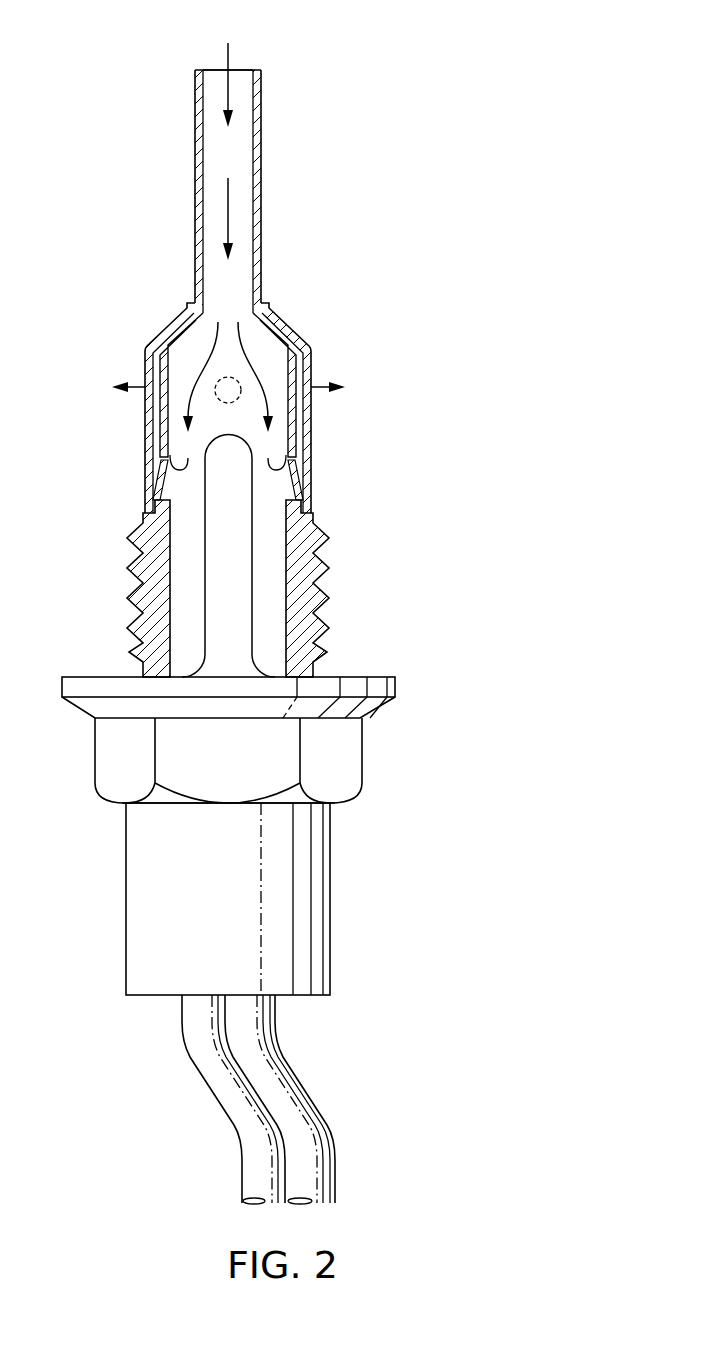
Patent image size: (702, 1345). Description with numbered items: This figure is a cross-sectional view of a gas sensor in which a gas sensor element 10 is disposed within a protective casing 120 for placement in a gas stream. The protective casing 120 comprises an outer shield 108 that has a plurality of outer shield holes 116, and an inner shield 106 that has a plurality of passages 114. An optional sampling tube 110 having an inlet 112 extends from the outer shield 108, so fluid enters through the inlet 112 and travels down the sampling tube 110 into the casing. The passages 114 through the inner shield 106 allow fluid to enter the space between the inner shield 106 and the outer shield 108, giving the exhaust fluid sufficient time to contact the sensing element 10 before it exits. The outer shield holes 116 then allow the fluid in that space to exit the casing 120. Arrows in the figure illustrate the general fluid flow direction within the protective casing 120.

The protective casing 120 is at (146, 66).
The inlet 112 is at (237, 70).
The sampling tube 110 is at (258, 180).
The outer shield 108 is at (172, 325).
The outer shield holes 116 is at (150, 382).
The inner shield 106 is at (296, 392).
The passages 114 is at (156, 476).
The gas sensor element 10 is at (242, 512).